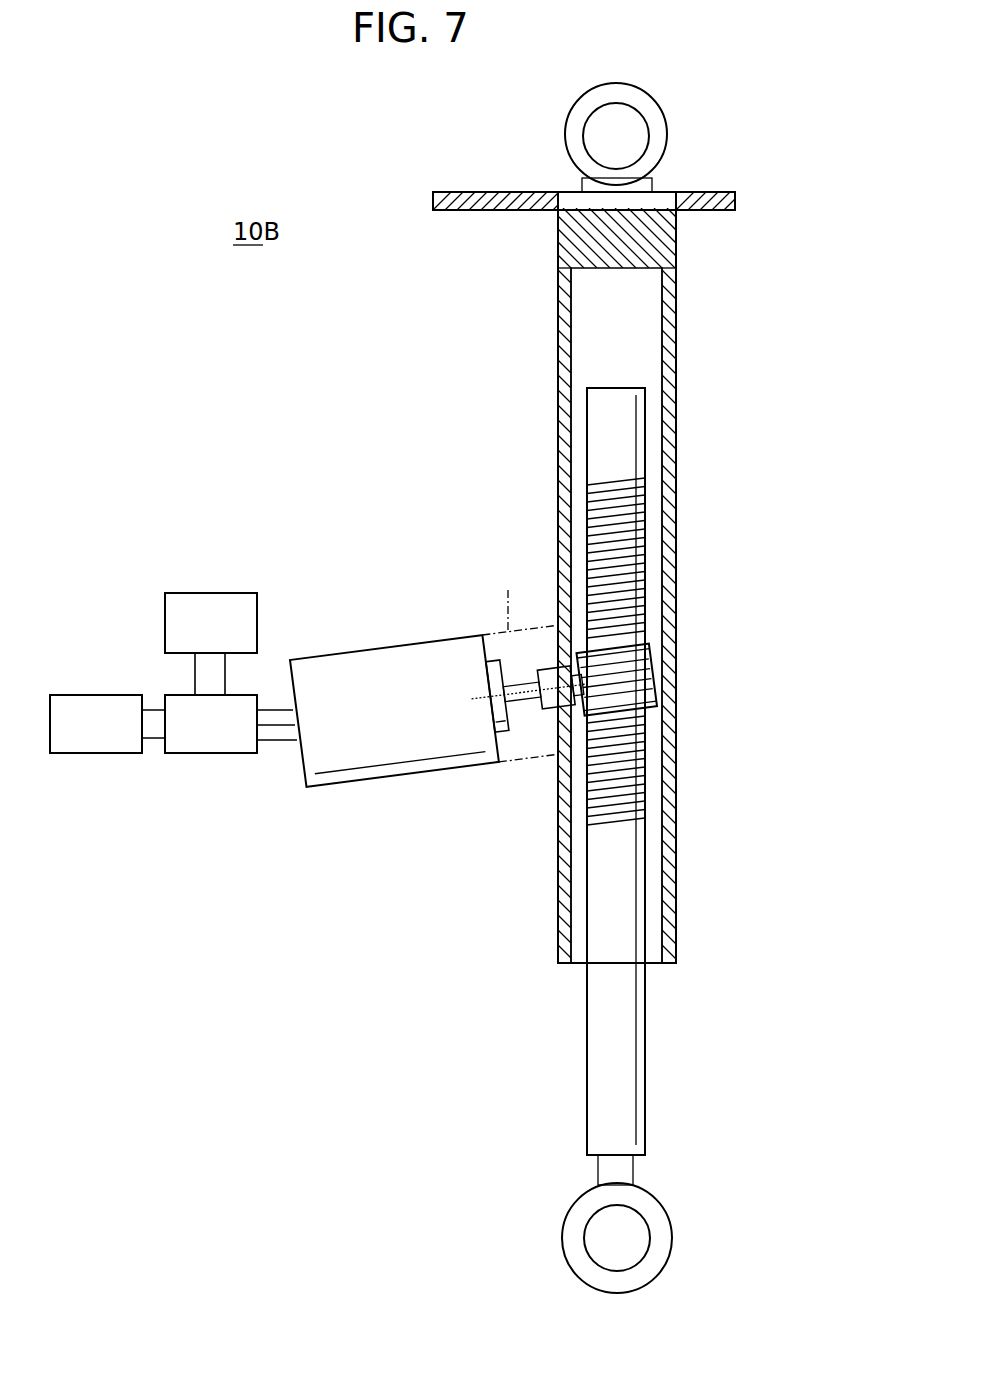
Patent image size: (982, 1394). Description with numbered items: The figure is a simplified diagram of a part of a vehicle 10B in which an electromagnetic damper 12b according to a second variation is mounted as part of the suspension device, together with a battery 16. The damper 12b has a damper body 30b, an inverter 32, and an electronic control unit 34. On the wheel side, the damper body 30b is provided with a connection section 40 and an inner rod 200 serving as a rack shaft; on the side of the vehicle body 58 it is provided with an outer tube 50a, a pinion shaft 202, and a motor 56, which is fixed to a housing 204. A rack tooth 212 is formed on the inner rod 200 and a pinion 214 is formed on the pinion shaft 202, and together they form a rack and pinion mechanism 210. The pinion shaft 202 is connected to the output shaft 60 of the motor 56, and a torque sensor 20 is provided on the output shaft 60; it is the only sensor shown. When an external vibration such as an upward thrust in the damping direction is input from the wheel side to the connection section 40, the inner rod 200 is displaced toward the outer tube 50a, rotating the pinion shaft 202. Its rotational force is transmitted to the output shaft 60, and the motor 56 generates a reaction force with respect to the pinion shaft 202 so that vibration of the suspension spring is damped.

The vehicle 10B is at (392, 688).
The electromagnetic damper 12b is at (470, 447).
The battery 16 is at (67, 695).
The torque sensor 20 is at (548, 707).
The damper body 30b is at (547, 397).
The inverter 32 is at (188, 755).
The electronic control unit 34 is at (186, 593).
The connection section 40 is at (662, 1227).
The outer tube 50a is at (672, 862).
The motor 56 is at (373, 657).
The vehicle body 58 is at (479, 192).
The output shaft 60 is at (525, 700).
The inner rod 200 is at (595, 1035).
The pinion shaft 202 is at (572, 689).
The housing 204 is at (515, 596).
The rack and pinion mechanism 210 is at (684, 651).
The rack tooth 212 is at (640, 595).
The pinion 214 is at (658, 680).